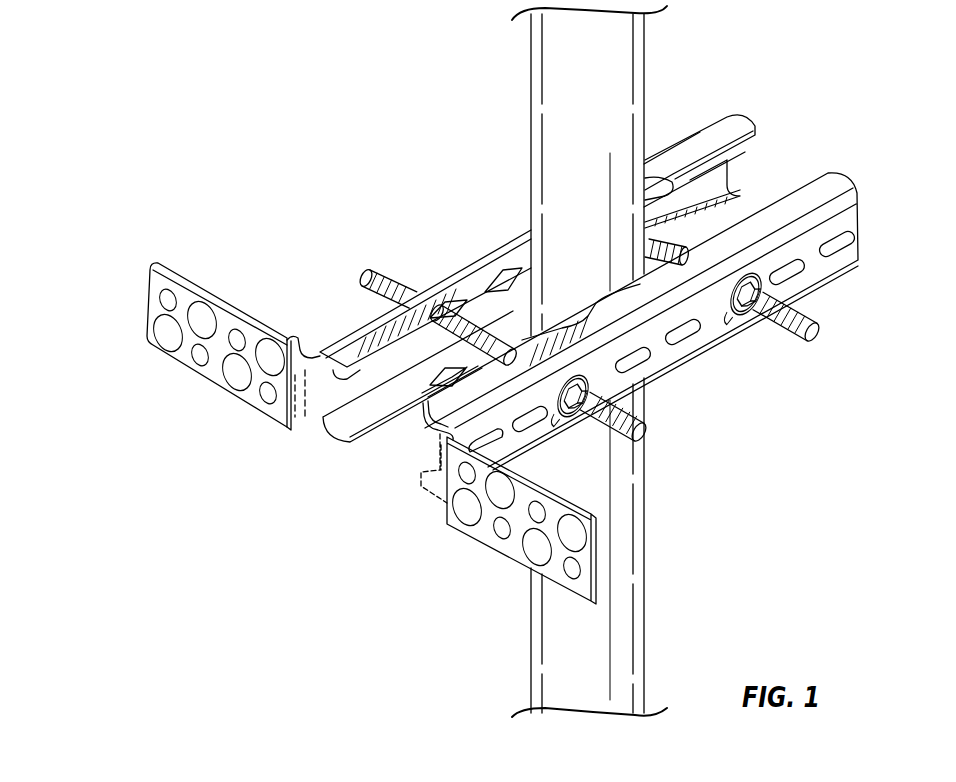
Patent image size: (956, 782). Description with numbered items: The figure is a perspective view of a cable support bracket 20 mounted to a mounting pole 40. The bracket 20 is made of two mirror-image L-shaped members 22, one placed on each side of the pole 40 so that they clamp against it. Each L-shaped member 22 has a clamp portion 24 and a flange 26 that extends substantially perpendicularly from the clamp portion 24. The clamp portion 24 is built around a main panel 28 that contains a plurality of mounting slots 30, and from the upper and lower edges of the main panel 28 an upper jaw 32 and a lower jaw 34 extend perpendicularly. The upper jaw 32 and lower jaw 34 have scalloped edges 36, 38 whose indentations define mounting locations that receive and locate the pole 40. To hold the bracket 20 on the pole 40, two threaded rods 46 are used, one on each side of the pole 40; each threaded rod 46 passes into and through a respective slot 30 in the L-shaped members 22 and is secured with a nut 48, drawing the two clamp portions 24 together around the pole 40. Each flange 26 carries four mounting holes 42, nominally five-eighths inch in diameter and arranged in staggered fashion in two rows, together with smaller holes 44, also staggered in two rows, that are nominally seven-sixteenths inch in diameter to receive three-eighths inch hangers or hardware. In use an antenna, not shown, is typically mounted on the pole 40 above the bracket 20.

The cable support bracket 20 is at (503, 361).
The L-shaped member 22 is at (623, 301).
The clamp portion 24 is at (636, 273).
The flange 26 is at (329, 433).
The main panel 28 is at (673, 358).
The mounting slot 30 is at (697, 330).
The upper jaw 32 is at (741, 135).
The lower jaw 34 is at (738, 195).
The scalloped edge 36 is at (523, 268).
The scalloped edge 38 is at (447, 369).
The mounting pole 40 is at (623, 669).
The mounting hole 42 is at (270, 357).
The smaller hole 44 is at (200, 353).
The threaded rod 46 is at (813, 326).
The nut 48 is at (756, 296).